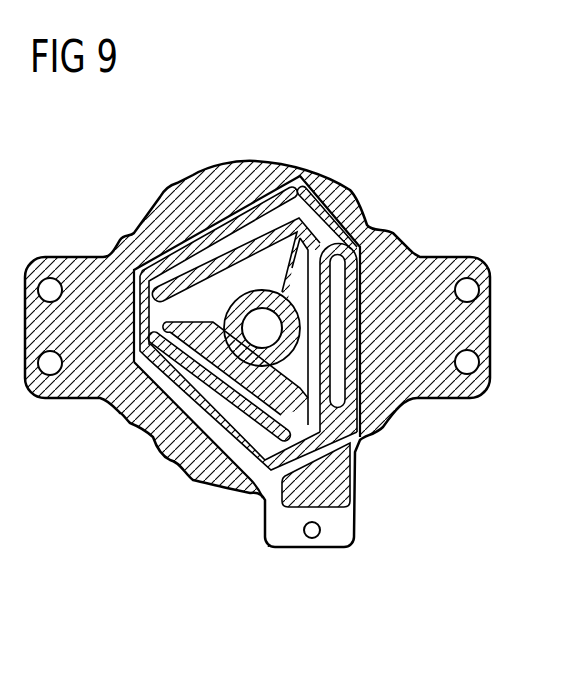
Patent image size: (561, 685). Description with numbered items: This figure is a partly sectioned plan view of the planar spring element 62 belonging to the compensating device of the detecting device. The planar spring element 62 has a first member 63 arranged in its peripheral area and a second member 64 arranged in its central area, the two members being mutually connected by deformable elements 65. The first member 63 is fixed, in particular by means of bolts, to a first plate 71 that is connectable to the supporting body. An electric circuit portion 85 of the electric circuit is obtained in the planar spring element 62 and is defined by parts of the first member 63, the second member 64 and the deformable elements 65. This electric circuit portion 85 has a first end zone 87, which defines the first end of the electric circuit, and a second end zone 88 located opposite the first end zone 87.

The electric circuit portion 85 is at (128, 172).
The planar spring element 62 is at (265, 176).
The first member 63 is at (158, 437).
The second member 64 is at (253, 297).
The deformable elements 65 is at (303, 200).
The first plate 71 is at (407, 380).
The first end zone 87 is at (330, 538).
The second end zone 88 is at (253, 338).